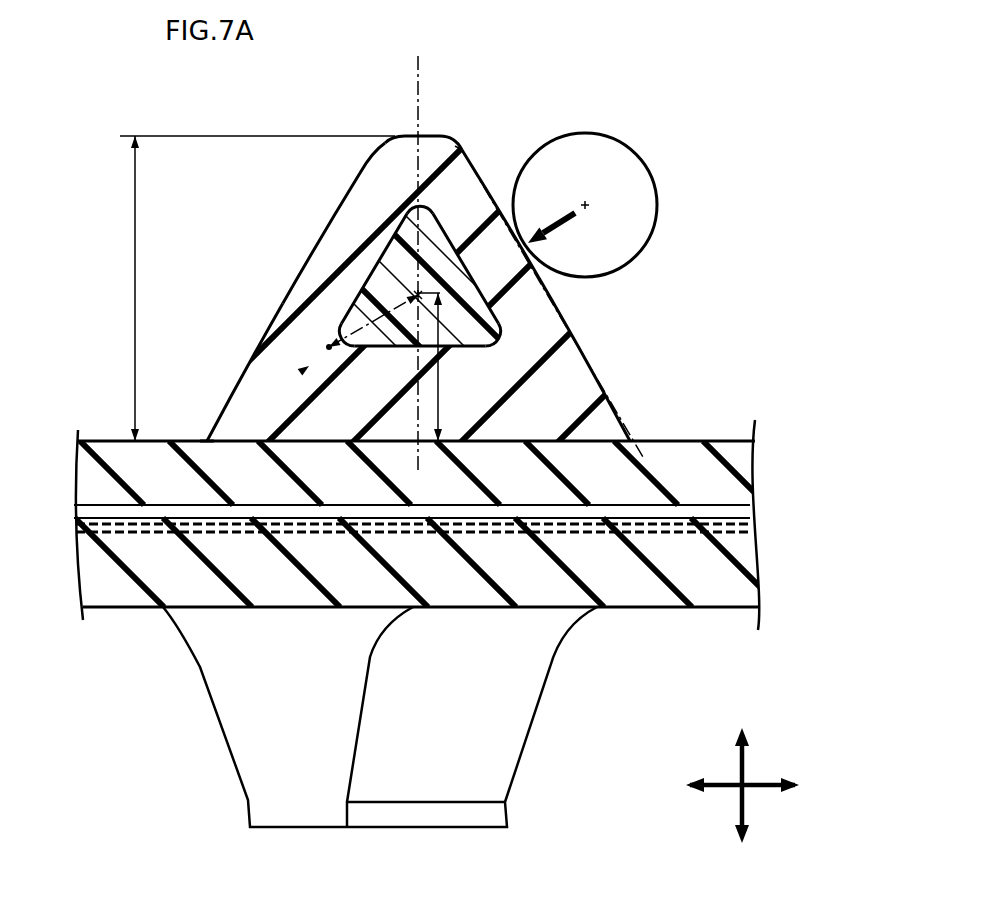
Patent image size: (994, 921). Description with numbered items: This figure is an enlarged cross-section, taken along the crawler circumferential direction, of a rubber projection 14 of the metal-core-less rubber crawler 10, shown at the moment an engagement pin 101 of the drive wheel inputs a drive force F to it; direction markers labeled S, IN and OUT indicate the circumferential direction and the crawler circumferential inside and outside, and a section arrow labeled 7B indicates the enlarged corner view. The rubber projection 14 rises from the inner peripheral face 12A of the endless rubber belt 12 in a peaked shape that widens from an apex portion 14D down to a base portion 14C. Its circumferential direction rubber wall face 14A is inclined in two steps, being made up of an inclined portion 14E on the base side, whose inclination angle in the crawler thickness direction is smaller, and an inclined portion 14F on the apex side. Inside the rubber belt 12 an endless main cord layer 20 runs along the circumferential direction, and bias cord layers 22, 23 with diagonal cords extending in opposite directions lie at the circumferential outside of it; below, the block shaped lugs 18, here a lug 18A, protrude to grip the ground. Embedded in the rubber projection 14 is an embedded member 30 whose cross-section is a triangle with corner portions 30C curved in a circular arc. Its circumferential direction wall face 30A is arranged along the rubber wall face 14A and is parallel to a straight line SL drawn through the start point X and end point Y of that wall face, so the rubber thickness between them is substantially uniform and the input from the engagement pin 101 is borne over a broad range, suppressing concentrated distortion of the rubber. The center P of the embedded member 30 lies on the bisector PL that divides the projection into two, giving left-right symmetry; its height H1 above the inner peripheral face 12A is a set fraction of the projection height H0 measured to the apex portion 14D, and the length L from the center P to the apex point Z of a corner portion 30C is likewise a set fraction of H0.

The rubber crawler 10 is at (128, 99).
The rubber belt 12 is at (97, 430).
The inner peripheral face 12A is at (115, 440).
The rubber projection 14 is at (355, 170).
The circumferential direction rubber wall face 14A is at (238, 167).
The base portion 14C is at (207, 440).
The apex portion 14D is at (428, 134).
The inclined portion 14E is at (265, 330).
The inclined portion 14F is at (340, 207).
The lug 18 is at (380, 762).
The lug 18A is at (292, 828).
The main cord layer 20 is at (722, 502).
The bias cord layer 22 is at (727, 516).
The bias cord layer 23 is at (740, 534).
The embedded member 30 is at (390, 353).
The circumferential direction wall face 30A is at (373, 268).
The corner portion 30C is at (425, 206).
The engagement pin 101 is at (657, 210).
The drive force F is at (553, 231).
The bisector PL is at (418, 64).
The straight line SL is at (643, 457).
The start point X is at (448, 146).
The end point Y is at (636, 447).
The height of the rubber projection H0 is at (134, 278).
The height of the center H1 is at (441, 390).
The length L is at (343, 322).
The center P is at (419, 293).
The apex point Z is at (327, 347).
The view direction of FIG. 7B is at (303, 370).
The belt running direction S is at (760, 782).
The inner side direction IN is at (741, 758).
The outer side direction OUT is at (743, 808).